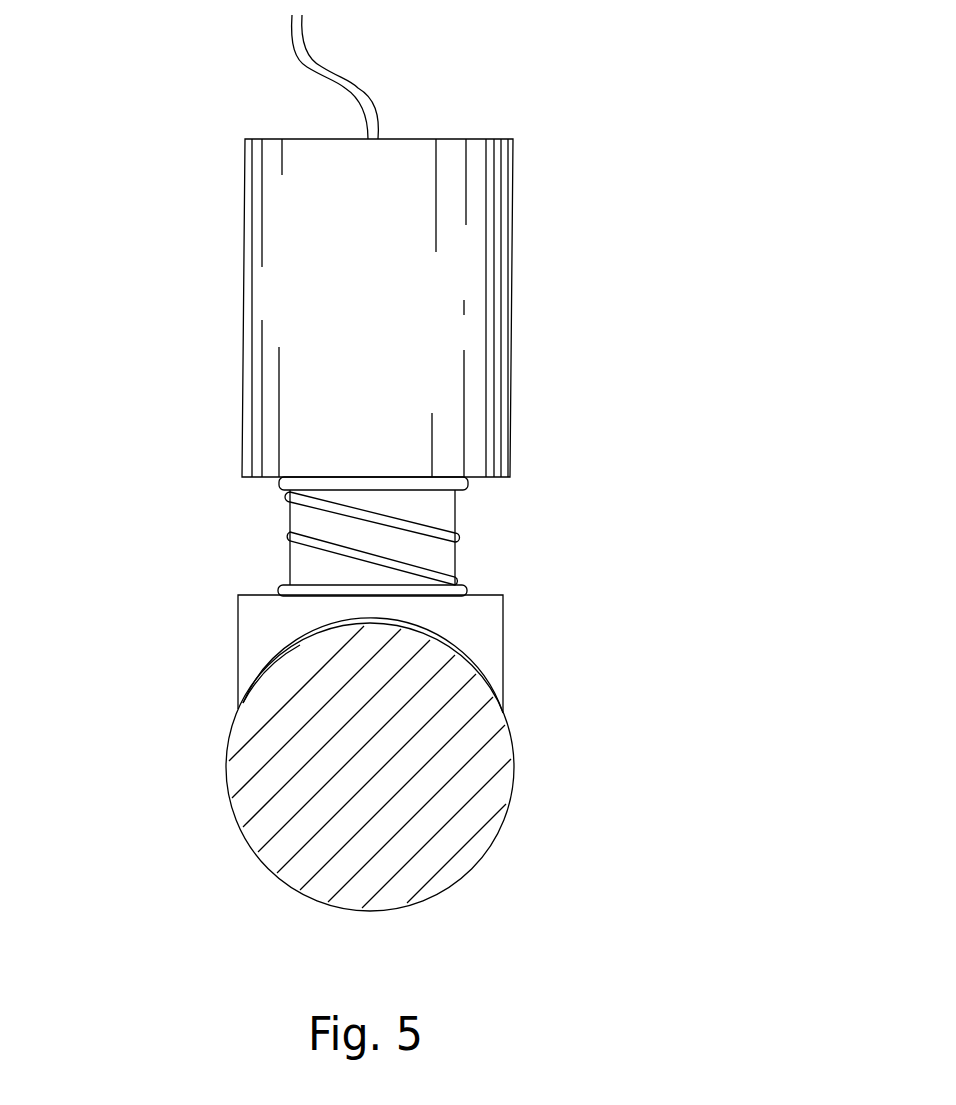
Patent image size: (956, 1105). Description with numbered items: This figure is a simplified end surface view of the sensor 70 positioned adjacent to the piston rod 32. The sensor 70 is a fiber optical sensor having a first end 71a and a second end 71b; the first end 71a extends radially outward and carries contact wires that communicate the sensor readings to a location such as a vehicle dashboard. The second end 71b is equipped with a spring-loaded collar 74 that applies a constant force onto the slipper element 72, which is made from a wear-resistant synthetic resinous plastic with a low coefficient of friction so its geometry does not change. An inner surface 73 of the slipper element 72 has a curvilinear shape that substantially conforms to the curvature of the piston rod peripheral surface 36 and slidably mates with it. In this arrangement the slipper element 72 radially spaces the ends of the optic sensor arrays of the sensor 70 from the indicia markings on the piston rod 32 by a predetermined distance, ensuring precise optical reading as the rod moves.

The sensor 70 is at (180, 347).
The first end 71a is at (244, 200).
The second end 71b is at (238, 614).
The spring-loaded collar 74 is at (457, 517).
The slipper element 72 is at (483, 622).
The inner surface 73 is at (258, 690).
The piston rod 32 is at (485, 792).
The piston rod peripheral surface 36 is at (228, 746).